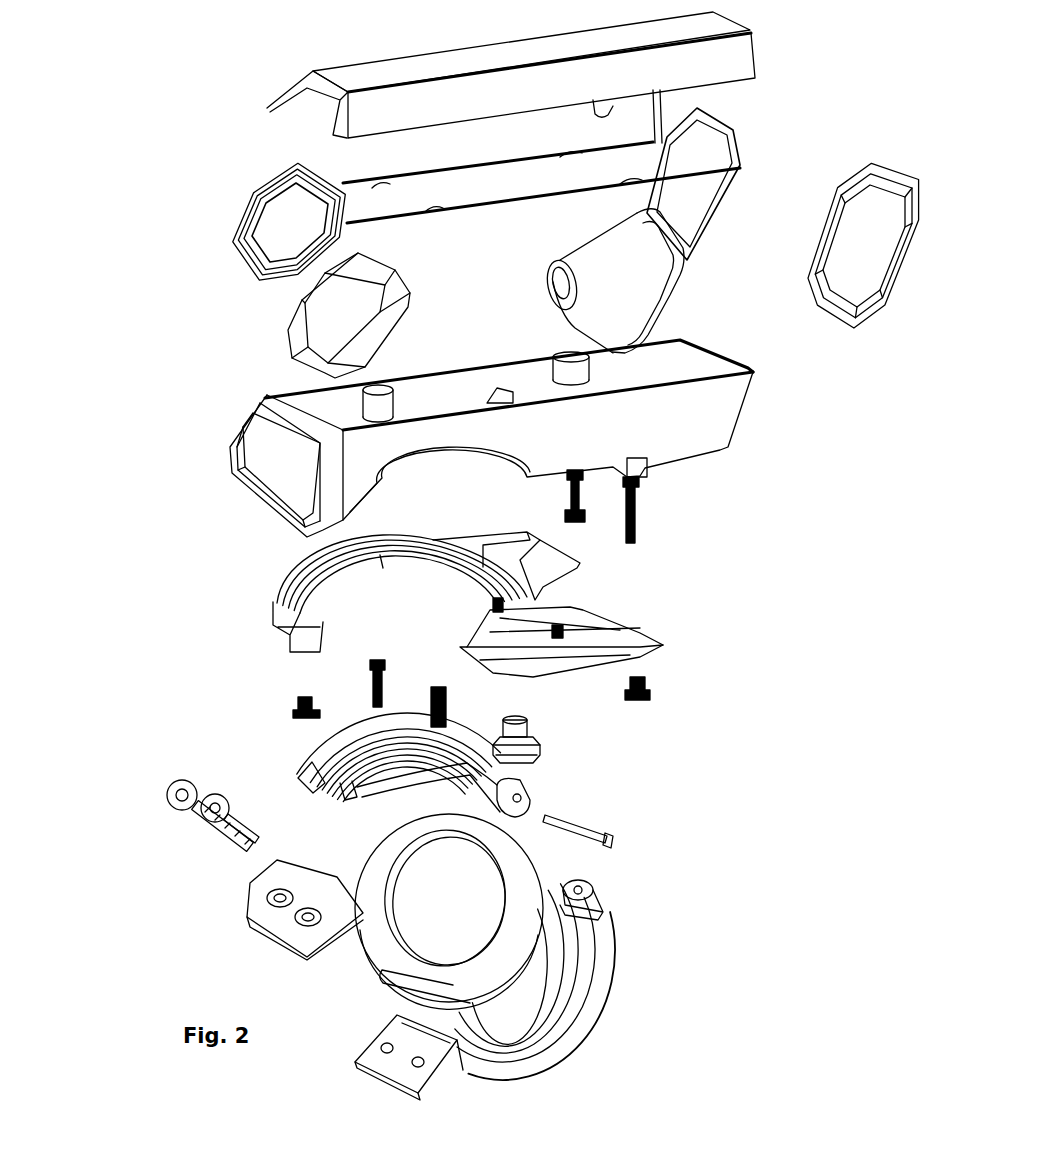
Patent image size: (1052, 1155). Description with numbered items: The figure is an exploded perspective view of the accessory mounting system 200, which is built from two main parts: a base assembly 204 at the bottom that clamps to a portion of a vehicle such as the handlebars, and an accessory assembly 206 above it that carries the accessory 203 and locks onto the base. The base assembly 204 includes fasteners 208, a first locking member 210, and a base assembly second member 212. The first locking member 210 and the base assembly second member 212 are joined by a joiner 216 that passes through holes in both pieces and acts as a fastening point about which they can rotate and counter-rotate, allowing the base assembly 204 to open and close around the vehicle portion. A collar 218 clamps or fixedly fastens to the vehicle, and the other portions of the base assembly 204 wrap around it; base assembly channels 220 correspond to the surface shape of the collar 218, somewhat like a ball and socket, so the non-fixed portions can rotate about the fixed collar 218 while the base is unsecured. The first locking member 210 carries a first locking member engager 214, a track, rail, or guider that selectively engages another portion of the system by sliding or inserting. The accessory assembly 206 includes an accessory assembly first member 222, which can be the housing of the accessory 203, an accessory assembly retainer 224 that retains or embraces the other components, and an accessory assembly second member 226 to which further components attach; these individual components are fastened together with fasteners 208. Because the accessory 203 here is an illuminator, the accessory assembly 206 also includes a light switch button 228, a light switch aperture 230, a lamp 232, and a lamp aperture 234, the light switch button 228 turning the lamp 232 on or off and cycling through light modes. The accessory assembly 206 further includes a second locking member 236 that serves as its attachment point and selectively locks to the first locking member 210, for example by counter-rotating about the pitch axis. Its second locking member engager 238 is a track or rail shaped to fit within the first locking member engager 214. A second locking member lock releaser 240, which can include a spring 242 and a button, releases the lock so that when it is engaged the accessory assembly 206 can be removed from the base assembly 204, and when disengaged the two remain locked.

The accessory mounting system 200 is at (143, 72).
The accessory 203 is at (826, 104).
The base assembly 204 is at (723, 752).
The accessory assembly 206 is at (110, 748).
The fasteners 208 is at (363, 678).
The first locking member 210 is at (500, 786).
The base assembly second member 212 is at (580, 1030).
The first locking member engager 214 is at (500, 762).
The joiner 216 is at (616, 836).
The collar 218 is at (503, 947).
The base assembly channels 220 is at (540, 1008).
The accessory assembly first member 222 is at (267, 108).
The accessory assembly retainer 224 is at (353, 181).
The accessory assembly second member 226 is at (270, 497).
The light switch button 228 is at (282, 227).
The light switch aperture 230 is at (289, 323).
The lamp 232 is at (627, 310).
The lamp aperture 234 is at (833, 313).
The second locking member 236 is at (680, 588).
The second locking member engager 238 is at (283, 588).
The second locking member lock releaser 240 is at (465, 647).
The spring 242 is at (545, 742).